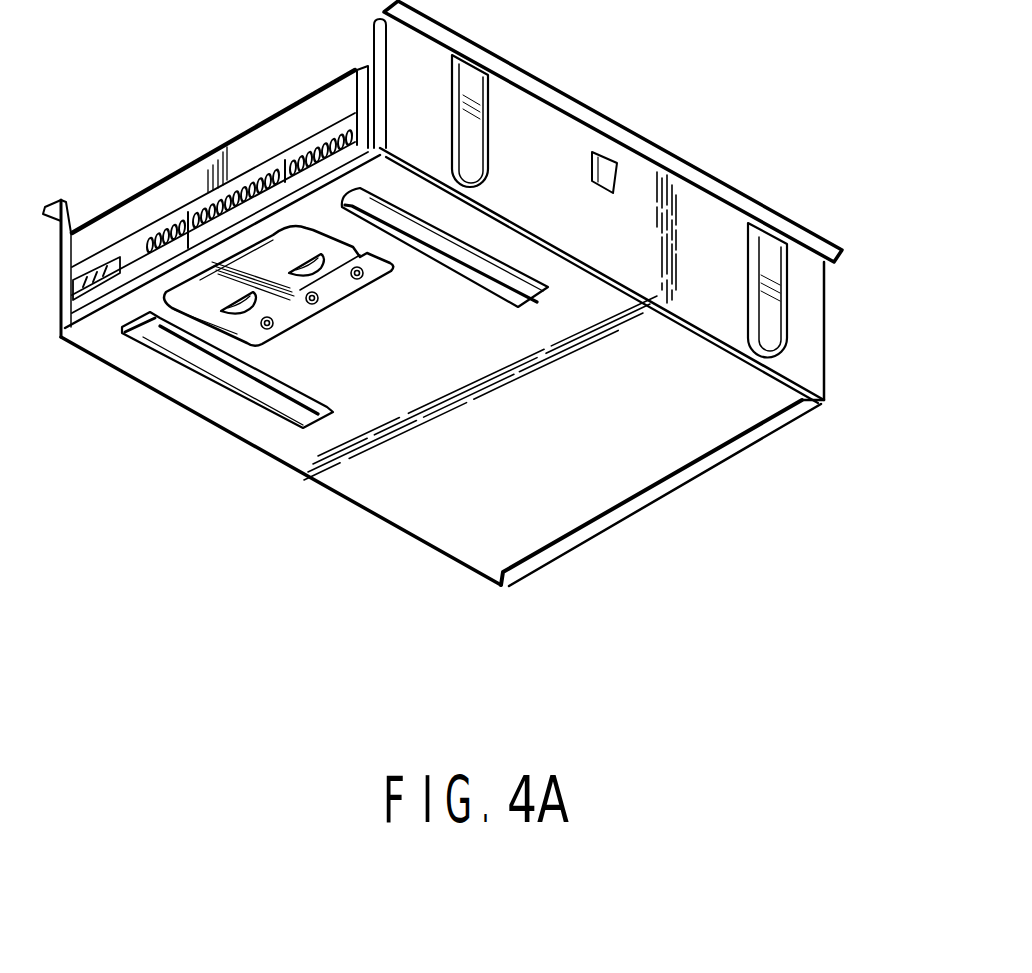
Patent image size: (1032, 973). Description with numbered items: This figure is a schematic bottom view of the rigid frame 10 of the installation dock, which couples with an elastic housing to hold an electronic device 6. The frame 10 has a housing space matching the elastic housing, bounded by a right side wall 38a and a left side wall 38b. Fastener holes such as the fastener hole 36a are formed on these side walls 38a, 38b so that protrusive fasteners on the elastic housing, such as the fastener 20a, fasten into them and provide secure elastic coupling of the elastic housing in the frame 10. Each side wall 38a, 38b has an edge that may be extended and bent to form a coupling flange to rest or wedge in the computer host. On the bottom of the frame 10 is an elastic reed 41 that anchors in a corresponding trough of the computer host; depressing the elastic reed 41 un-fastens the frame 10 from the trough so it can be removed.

The frame 10 is at (810, 331).
The electronic device 6 is at (240, 157).
The elastic reed 41 is at (213, 260).
The fastener 20a is at (617, 163).
The fastener hole 36a is at (673, 168).
The right side wall 38a is at (685, 226).
The left side wall 38b is at (290, 467).